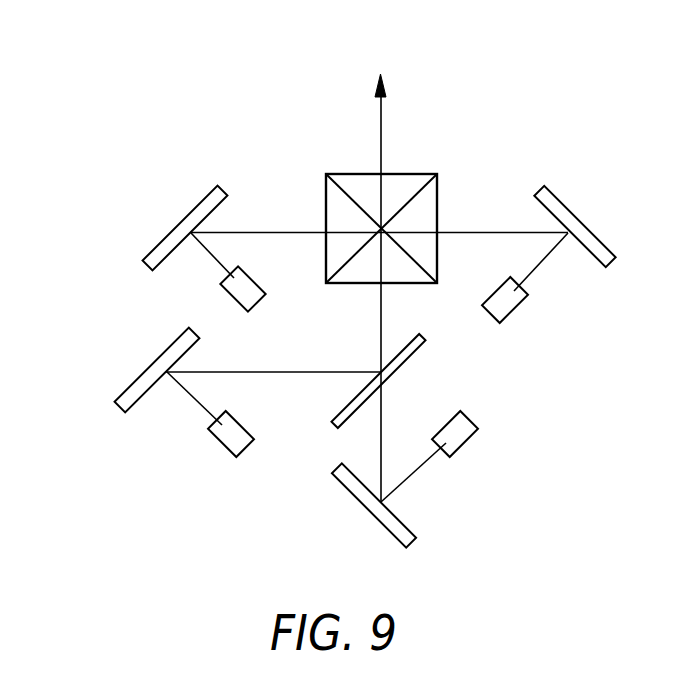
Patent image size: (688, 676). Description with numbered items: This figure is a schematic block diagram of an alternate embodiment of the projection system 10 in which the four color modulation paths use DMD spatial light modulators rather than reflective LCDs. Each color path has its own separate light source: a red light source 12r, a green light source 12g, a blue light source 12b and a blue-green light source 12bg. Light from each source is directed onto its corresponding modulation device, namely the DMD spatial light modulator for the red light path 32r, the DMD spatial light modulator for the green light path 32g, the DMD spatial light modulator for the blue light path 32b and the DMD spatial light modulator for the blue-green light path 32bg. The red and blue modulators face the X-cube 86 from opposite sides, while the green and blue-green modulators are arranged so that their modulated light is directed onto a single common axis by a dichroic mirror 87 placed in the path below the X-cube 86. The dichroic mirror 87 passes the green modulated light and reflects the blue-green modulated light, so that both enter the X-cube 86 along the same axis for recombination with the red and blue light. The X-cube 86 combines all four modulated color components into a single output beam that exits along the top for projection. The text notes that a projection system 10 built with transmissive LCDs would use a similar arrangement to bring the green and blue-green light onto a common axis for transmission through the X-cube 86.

The projection system 10 is at (126, 114).
The X-cube 86 is at (415, 173).
The dichroic mirror 87 is at (412, 356).
The DMD spatial light modulator, blue light path 32b is at (183, 212).
The light source, blue path 12b is at (230, 294).
The DMD spatial light modulator, red light path 32r is at (600, 237).
The light source, red path 12r is at (518, 305).
The DMD spatial light modulator, blue-green light path 32bg is at (138, 378).
The blue-green light source 12bg is at (213, 443).
The DMD spatial light modulator, green light path 32g is at (405, 522).
The light source, green path 12g is at (472, 440).